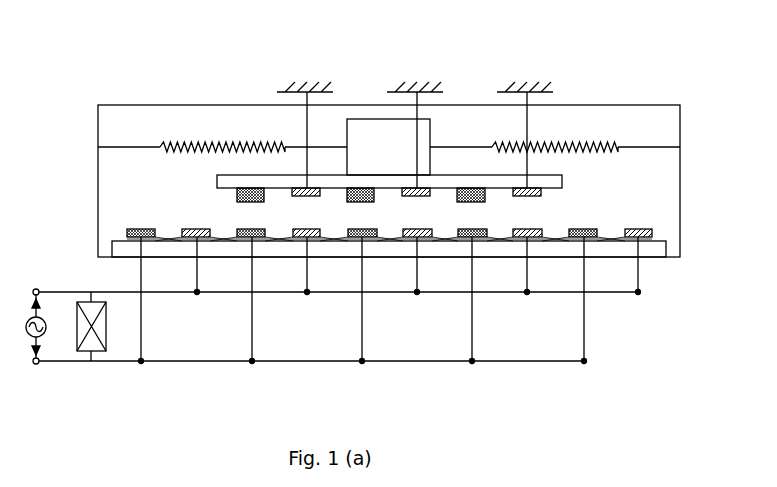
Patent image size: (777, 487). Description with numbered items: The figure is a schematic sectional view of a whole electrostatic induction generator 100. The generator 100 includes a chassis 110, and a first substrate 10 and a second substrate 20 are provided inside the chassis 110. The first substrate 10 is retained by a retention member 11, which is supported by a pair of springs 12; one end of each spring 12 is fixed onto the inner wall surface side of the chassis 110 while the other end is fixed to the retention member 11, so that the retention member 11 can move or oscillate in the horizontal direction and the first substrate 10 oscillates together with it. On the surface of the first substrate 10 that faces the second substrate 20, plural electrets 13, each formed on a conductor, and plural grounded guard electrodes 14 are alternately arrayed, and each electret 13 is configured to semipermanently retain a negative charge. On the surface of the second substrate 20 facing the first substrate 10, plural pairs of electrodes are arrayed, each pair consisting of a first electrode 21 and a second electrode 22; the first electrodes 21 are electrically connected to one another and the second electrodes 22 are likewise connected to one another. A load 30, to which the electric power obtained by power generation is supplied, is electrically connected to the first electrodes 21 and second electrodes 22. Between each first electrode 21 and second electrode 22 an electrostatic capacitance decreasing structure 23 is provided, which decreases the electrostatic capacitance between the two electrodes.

The electrostatic induction generator 100 is at (157, 93).
The chassis 110 is at (121, 106).
The first substrate 10 is at (217, 180).
The retention member 11 is at (385, 132).
The spring 12 is at (236, 147).
The electret 13 is at (238, 188).
The guard electrode 14 is at (320, 190).
The second substrate 20 is at (650, 250).
The first electrode 21 is at (590, 229).
The second electrode 22 is at (640, 229).
The electrostatic capacitance decreasing structure 23 is at (603, 241).
The load 30 is at (93, 343).